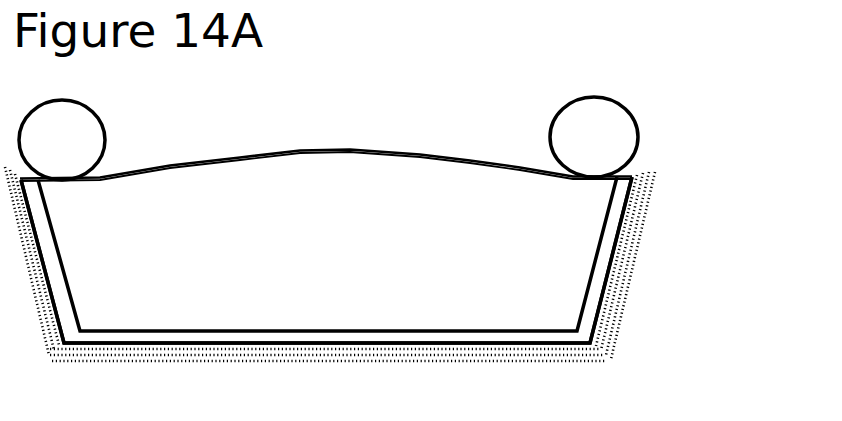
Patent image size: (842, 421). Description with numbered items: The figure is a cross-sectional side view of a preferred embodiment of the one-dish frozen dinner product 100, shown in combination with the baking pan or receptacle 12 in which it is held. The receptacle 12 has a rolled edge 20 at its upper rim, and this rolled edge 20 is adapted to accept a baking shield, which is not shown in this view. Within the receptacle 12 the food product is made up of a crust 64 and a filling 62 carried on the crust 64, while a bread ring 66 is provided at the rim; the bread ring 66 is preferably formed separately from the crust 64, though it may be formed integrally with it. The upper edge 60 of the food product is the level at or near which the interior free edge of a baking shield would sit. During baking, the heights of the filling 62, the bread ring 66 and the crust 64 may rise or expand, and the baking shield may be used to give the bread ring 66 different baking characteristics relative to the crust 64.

The one-dish frozen dinner product 100 is at (150, 370).
The receptacle 12 is at (603, 337).
The rolled edge 20 is at (660, 178).
The upper edge 60 is at (262, 157).
The filling 62 is at (405, 182).
The crust 64 is at (595, 289).
The bread ring 66 is at (632, 122).